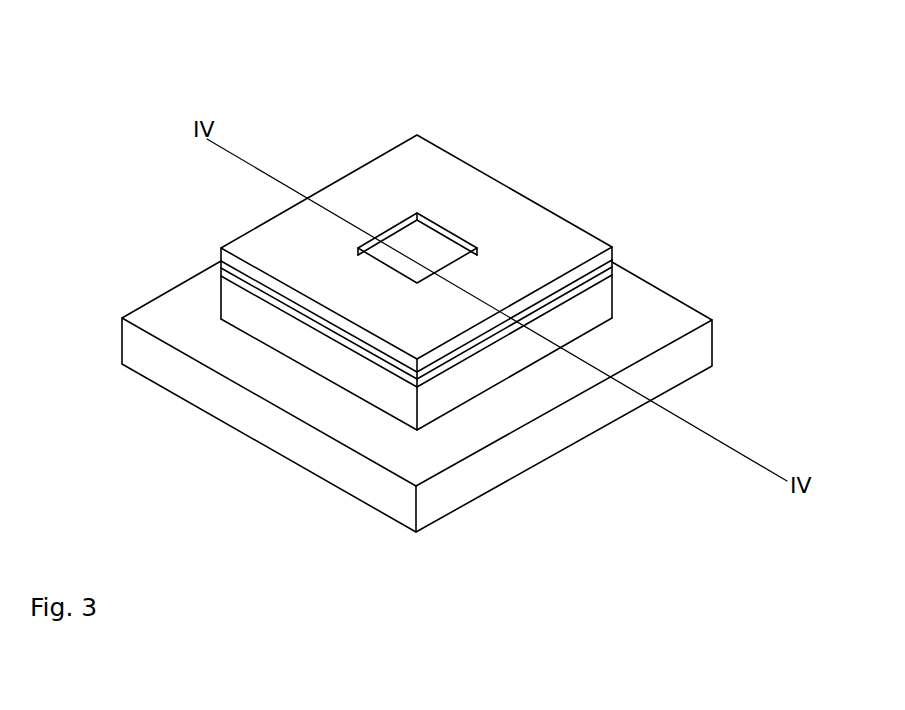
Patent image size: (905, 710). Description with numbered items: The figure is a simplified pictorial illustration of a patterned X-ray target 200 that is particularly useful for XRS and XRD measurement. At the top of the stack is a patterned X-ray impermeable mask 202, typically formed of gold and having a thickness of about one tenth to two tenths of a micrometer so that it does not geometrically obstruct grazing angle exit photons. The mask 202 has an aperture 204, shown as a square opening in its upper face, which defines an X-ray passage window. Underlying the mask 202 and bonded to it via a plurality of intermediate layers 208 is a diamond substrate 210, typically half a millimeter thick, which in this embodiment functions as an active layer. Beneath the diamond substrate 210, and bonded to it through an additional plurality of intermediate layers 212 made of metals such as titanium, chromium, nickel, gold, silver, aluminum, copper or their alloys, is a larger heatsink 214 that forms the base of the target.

The patterned X-ray target 200 is at (270, 103).
The patterned X-ray impermeable mask 202 is at (540, 237).
The aperture 204 is at (417, 243).
The intermediate layers 208 is at (603, 268).
The diamond substrate 210 is at (555, 321).
The additional intermediate layers 212 is at (553, 348).
The heatsink 214 is at (532, 430).